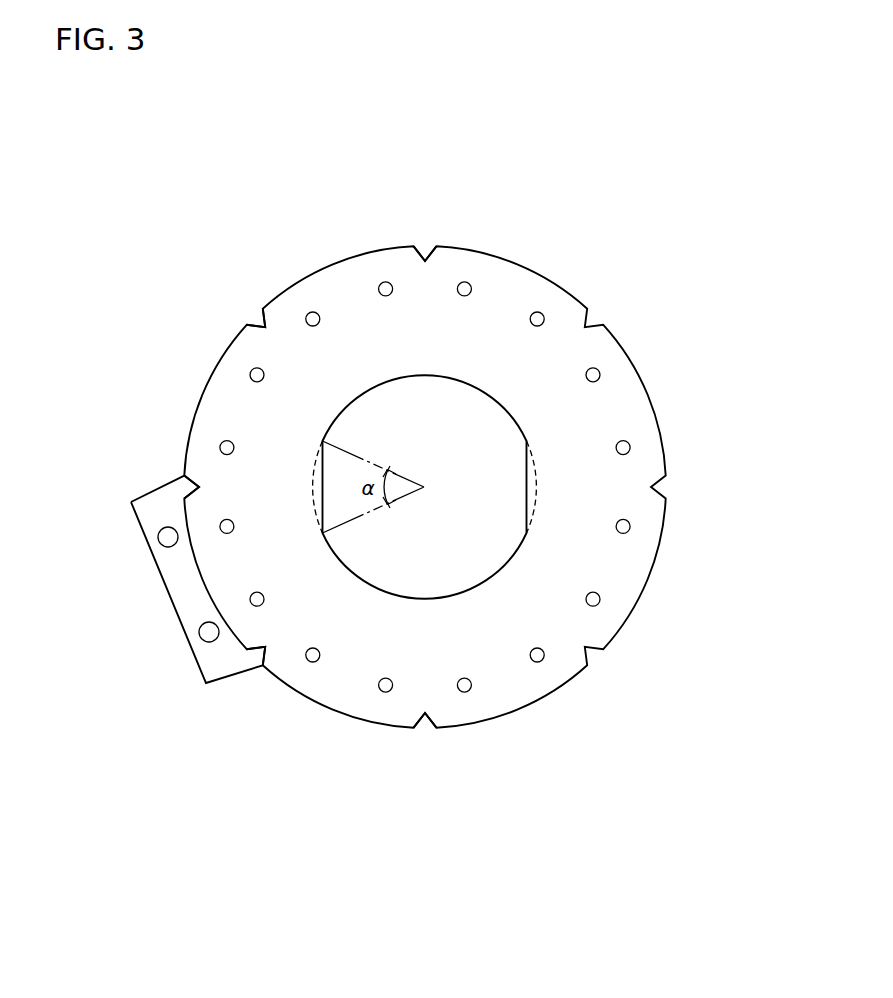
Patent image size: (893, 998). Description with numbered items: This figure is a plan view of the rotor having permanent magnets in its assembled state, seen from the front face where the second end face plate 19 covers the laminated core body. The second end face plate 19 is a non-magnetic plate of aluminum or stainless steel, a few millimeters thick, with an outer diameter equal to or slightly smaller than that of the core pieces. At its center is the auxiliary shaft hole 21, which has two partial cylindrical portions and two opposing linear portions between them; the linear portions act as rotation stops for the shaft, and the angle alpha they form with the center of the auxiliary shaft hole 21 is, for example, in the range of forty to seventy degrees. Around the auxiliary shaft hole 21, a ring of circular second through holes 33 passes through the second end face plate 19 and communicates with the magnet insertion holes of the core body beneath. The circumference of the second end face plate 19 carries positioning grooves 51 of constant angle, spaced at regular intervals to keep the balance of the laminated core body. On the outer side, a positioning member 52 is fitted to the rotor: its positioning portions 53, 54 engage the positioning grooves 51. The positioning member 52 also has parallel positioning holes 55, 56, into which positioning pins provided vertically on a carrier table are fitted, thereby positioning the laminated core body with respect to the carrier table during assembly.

The second end face plate 19 is at (532, 266).
The auxiliary shaft hole 21 is at (506, 417).
The second through holes 33 is at (603, 373).
The positioning grooves 51 is at (260, 322).
The positioning member 52 is at (172, 612).
The positioning portion 53 is at (188, 488).
The positioning portion 54 is at (256, 665).
The positioning hole 55 is at (167, 537).
The positioning hole 56 is at (209, 632).